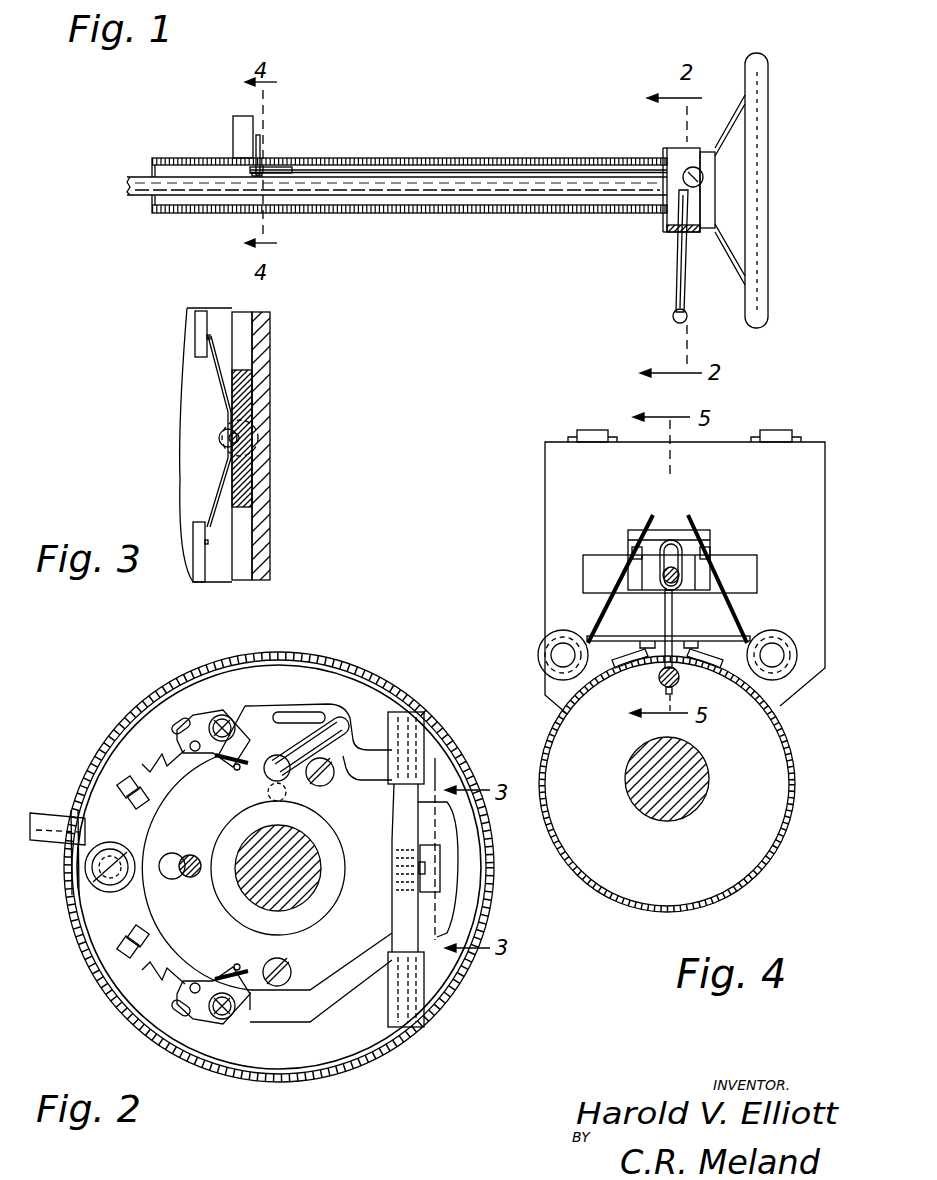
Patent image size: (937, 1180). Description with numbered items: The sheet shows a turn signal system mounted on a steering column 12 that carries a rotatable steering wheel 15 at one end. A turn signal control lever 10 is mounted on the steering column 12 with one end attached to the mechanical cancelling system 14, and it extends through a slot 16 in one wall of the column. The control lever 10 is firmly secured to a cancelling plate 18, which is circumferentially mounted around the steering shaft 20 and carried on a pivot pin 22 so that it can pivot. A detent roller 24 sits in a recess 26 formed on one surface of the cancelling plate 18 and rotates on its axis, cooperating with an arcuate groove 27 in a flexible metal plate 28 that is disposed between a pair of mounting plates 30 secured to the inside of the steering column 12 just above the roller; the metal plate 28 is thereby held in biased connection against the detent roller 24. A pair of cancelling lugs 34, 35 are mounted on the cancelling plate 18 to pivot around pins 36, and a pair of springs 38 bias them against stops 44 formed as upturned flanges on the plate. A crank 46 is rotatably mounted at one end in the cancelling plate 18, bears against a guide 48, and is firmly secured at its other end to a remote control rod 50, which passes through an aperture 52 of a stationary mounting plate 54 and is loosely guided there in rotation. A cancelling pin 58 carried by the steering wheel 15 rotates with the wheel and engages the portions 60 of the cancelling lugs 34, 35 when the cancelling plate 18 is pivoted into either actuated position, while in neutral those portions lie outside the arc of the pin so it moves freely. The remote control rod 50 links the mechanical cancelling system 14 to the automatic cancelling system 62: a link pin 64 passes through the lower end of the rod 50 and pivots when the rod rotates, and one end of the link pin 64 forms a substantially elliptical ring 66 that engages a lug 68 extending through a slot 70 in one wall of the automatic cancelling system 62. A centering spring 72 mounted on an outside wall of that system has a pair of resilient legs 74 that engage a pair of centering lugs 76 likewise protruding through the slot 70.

In FIG. 1, the turn signal control lever 10 is at (676, 258).
In FIG. 2, the turn signal control lever 10 is at (45, 815).
In FIG. 1, the steering column 12 is at (497, 215).
In FIG. 4, the steering column 12 is at (792, 800).
In FIG. 2, the steering column 12 is at (317, 1080).
In FIG. 1, the mechanical cancelling system 14 is at (695, 232).
In FIG. 3, the mechanical cancelling system 14 is at (185, 380).
In FIG. 2, the mechanical cancelling system 14 is at (295, 680).
In FIG. 1, the steering wheel 15 is at (757, 62).
In FIG. 2, the slot 16 is at (74, 812).
In FIG. 3, the cancelling plate 18 is at (243, 332).
In FIG. 2, the cancelling plate 18 is at (110, 912).
In FIG. 1, the steering shaft 20 is at (137, 182).
In FIG. 4, the steering shaft 20 is at (690, 792).
In FIG. 2, the steering shaft 20 is at (310, 870).
In FIG. 2, the pivot pin 22 is at (95, 870).
In FIG. 3, the detent roller 24 is at (228, 443).
In FIG. 2, the detent roller 24 is at (425, 865).
In FIG. 3, the recess 26 is at (252, 425).
In FIG. 2, the recess 26 is at (430, 875).
In FIG. 3, the arcuate groove 27 is at (226, 432).
In FIG. 2, the arcuate groove 27 is at (392, 862).
In FIG. 3, the metal plate 28 is at (205, 362).
In FIG. 2, the metal plate 28 is at (412, 915).
In FIG. 3, the mounting plates 30 is at (197, 322).
In FIG. 2, the mounting plates 30 is at (412, 750).
In FIG. 2, the cancelling lug 34 is at (240, 740).
In FIG. 2, the cancelling lug 35 is at (250, 1010).
In FIG. 2, the pins 36 is at (220, 715).
In FIG. 2, the springs 38 is at (165, 760).
In FIG. 2, the stops 44 is at (183, 722).
In FIG. 2, the crank 46 is at (323, 723).
In FIG. 2, the guide 48 is at (353, 722).
In FIG. 1, the remote control rod 50 is at (355, 170).
In FIG. 4, the remote control rod 50 is at (660, 680).
In FIG. 2, the remote control rod 50 is at (279, 800).
In FIG. 2, the aperture 52 is at (264, 775).
In FIG. 3, the stationary mounting plate 54 is at (262, 483).
In FIG. 2, the stationary mounting plate 54 is at (360, 1030).
In FIG. 1, the cancelling pin 58 is at (688, 170).
In FIG. 2, the cancelling pin 58 is at (183, 880).
In FIG. 2, the portions of the cancelling lugs 60 is at (237, 765).
In FIG. 1, the automatic cancelling system 62 is at (233, 122).
In FIG. 4, the automatic cancelling system 62 is at (547, 458).
In FIG. 1, the link pin 64 is at (262, 152).
In FIG. 4, the link pin 64 is at (673, 620).
In FIG. 4, the elliptical ring 66 is at (667, 540).
In FIG. 1, the lug 68 is at (263, 150).
In FIG. 4, the lug 68 is at (700, 570).
In FIG. 4, the slot 70 is at (583, 560).
In FIG. 4, the centering spring 72 is at (620, 640).
In FIG. 4, the resilient legs 74 is at (652, 520).
In FIG. 4, the centering lugs 76 is at (640, 555).